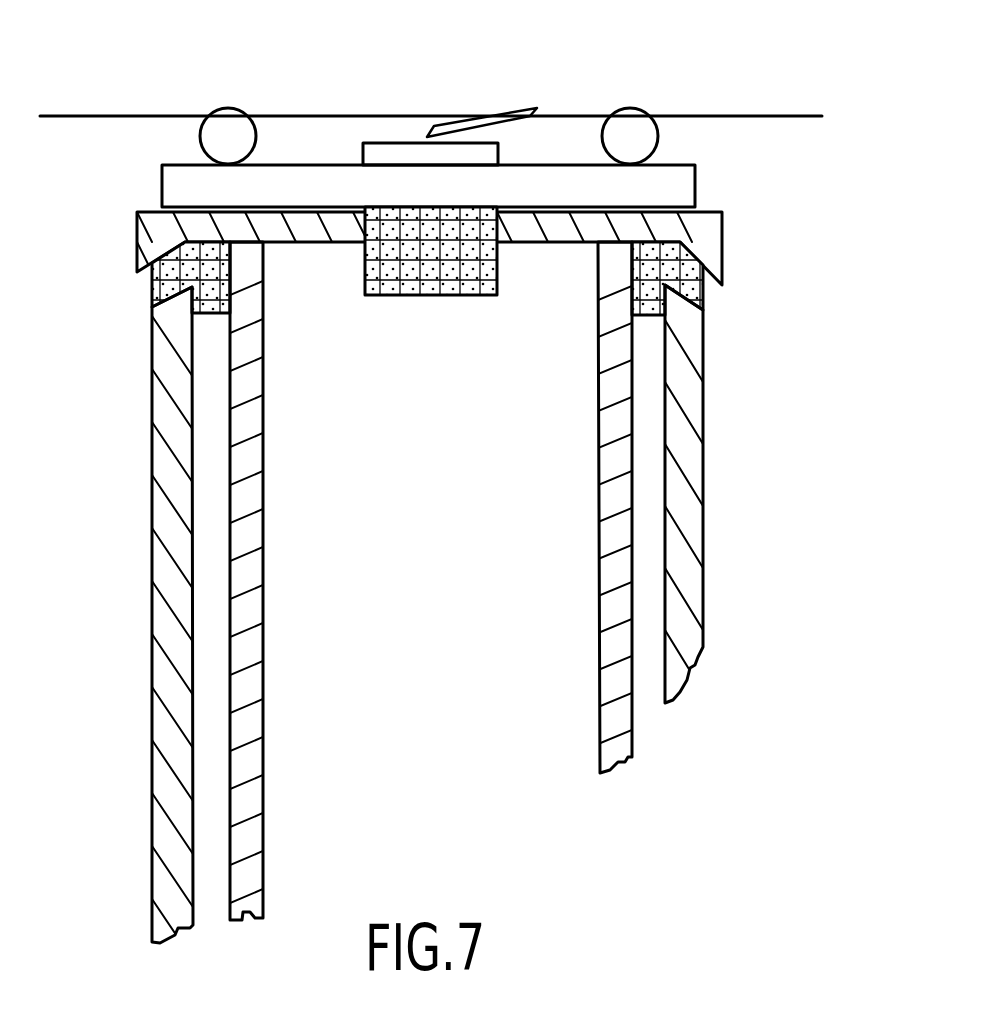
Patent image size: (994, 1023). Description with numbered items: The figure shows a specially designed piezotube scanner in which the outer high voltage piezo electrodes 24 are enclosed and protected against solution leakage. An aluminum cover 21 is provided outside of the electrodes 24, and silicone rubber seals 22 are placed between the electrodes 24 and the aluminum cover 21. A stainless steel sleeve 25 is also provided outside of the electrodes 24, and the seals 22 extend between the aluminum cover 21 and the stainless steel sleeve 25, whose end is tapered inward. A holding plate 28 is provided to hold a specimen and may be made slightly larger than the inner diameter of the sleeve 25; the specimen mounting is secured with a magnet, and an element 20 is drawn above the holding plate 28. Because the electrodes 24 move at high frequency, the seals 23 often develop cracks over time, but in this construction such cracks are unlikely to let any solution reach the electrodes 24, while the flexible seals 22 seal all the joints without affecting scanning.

The blade element 20 is at (472, 108).
The aluminum cover 21 is at (723, 250).
The silicone rubber seals 22 is at (225, 300).
The seals 23 is at (372, 295).
The outer high voltage piezo electrodes 24 is at (613, 598).
The stainless steel sleeve 25 is at (167, 712).
The holding plate 28 is at (678, 184).